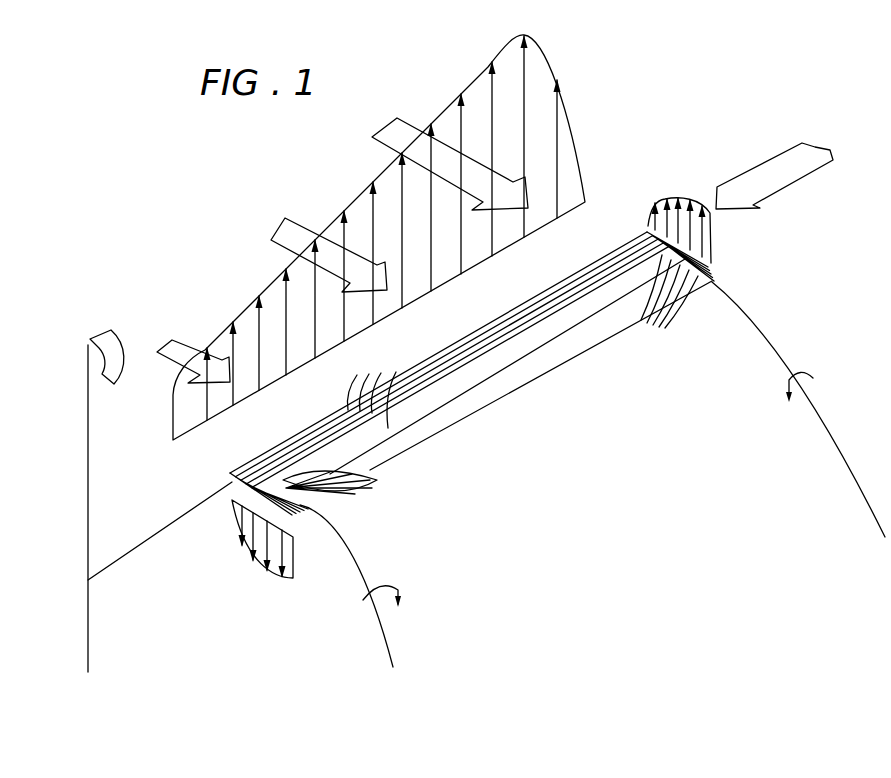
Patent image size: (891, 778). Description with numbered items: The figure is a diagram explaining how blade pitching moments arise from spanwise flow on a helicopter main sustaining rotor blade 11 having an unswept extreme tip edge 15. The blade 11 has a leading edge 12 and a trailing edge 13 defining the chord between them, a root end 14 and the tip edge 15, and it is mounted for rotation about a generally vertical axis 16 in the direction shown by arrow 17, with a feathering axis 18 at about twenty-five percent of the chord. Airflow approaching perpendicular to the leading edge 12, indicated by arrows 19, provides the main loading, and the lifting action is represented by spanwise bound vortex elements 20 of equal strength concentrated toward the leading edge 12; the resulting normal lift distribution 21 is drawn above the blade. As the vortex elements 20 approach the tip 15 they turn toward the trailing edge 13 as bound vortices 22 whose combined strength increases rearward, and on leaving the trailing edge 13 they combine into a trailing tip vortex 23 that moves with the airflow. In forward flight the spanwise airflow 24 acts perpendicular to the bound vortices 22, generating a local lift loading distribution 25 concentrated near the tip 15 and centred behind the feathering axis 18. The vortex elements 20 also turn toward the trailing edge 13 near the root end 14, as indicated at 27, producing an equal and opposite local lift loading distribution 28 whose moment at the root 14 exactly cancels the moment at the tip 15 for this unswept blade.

The helicopter main sustaining rotor blade 11 is at (481, 373).
The leading edge 12 is at (481, 373).
The trailing edge 13 is at (475, 412).
The root end 14 is at (228, 480).
The unswept extreme tip edge 15 is at (712, 281).
The generally vertical axis 16 is at (87, 383).
The arrow 17 is at (112, 338).
The feathering axis 18 is at (787, 154).
The arrows 19 is at (291, 218).
The spanwise bound vortex elements 20 is at (398, 374).
The normal lift distribution 21 is at (473, 79).
The bound vortices 22 is at (668, 306).
The trailing tip vortex 23 is at (832, 423).
The spanwise airflow 24 is at (752, 167).
The local lift loading distribution 25 is at (668, 205).
The turned vortex elements at root 27 is at (343, 483).
The local lift loading distribution 28 is at (285, 578).